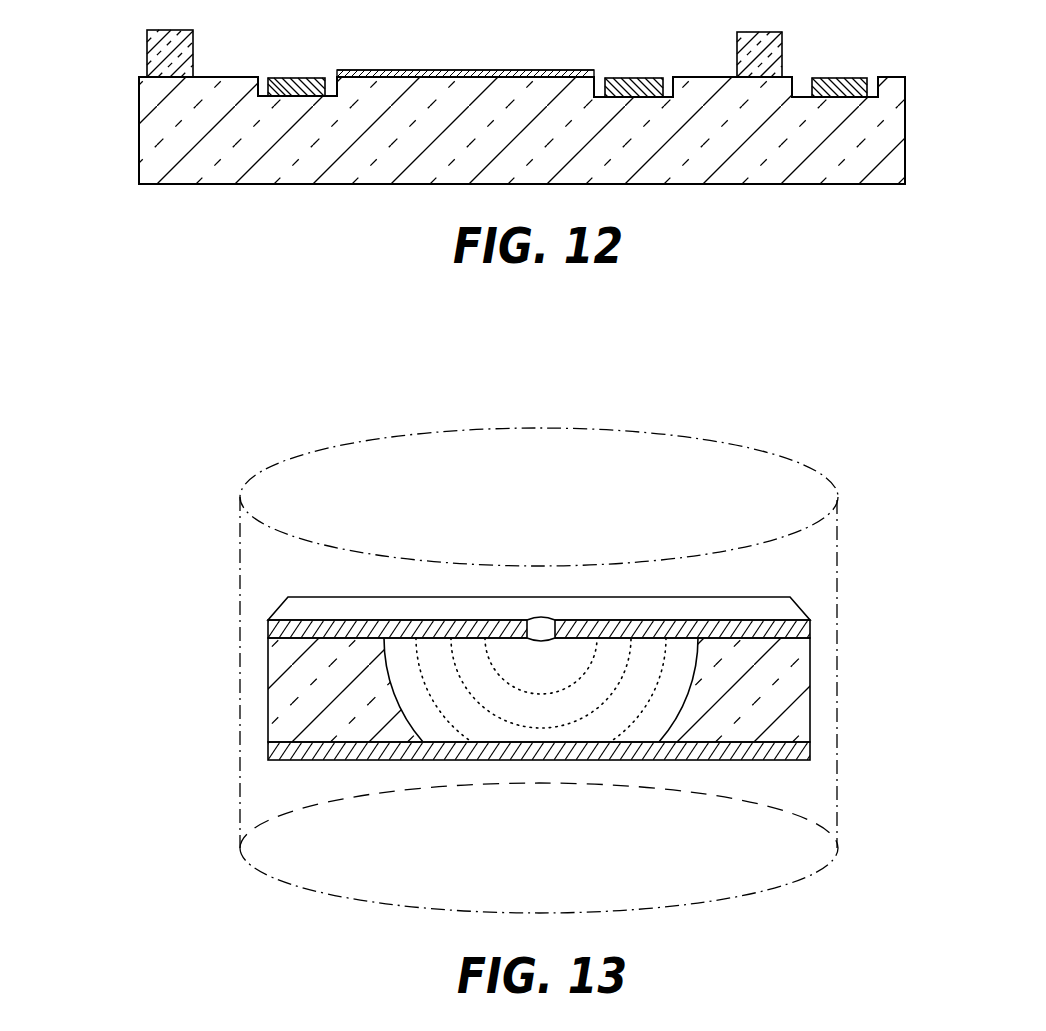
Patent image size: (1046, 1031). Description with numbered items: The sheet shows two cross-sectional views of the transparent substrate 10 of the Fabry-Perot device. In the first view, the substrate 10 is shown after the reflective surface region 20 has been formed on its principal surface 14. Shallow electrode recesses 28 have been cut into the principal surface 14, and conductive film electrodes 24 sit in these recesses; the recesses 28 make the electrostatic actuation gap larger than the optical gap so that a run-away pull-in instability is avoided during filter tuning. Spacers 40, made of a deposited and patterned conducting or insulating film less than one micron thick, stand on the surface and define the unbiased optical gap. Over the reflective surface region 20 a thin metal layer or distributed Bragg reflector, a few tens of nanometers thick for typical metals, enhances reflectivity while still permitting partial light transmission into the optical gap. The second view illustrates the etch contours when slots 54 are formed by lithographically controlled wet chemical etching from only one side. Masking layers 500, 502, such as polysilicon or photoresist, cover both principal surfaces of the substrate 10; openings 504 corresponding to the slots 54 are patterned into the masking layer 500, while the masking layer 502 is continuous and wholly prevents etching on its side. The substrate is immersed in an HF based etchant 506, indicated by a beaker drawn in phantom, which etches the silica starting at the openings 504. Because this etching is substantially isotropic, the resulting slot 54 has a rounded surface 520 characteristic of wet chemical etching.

In FIG. 12, the substrate 10 is at (150, 133).
In FIG. 13, the substrate 10 is at (764, 698).
In FIG. 12, the principal surface 14 is at (467, 62).
In FIG. 12, the reflective surface region 20 is at (410, 70).
In FIG. 12, the electrode 24 is at (307, 78).
In FIG. 12, the electrode recess 28 is at (330, 66).
In FIG. 12, the spacer 40 is at (178, 58).
In FIG. 13, the slot 54 is at (556, 674).
In FIG. 13, the masking layer 500 is at (290, 608).
In FIG. 13, the masking layer 502 is at (268, 752).
In FIG. 13, the opening 504 is at (540, 609).
In FIG. 13, the HF based etchant 506 is at (842, 566).
In FIG. 13, the rounded surface 520 is at (428, 732).